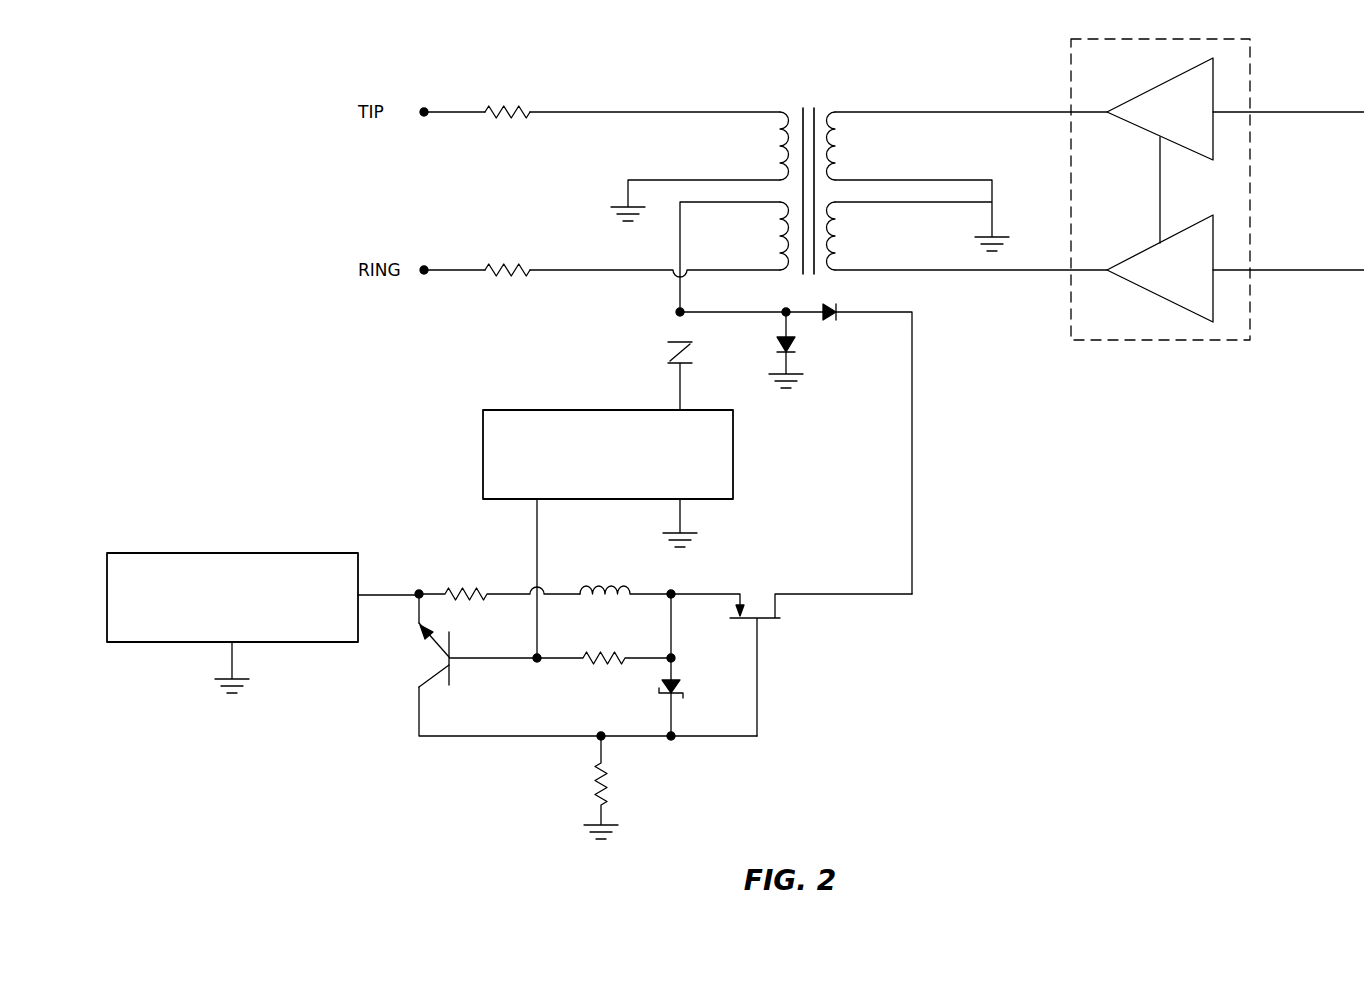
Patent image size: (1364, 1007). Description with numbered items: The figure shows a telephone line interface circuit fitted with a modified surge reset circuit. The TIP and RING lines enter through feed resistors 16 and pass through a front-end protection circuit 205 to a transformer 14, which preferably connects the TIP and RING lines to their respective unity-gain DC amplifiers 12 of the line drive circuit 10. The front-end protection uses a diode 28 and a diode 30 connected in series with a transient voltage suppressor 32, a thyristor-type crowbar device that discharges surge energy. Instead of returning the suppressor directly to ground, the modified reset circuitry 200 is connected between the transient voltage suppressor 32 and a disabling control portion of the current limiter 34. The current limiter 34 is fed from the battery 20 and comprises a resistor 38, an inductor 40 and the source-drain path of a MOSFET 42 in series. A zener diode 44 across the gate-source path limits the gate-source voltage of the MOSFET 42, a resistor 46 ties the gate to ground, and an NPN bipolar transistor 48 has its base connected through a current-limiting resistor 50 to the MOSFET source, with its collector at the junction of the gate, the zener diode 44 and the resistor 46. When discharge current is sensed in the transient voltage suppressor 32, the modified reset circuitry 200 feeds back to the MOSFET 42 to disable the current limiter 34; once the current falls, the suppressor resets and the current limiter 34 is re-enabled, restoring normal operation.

The line drive circuit 10 is at (1250, 56).
The unity-gain DC amplifier 12 is at (1235, 190).
The transformer 14 is at (818, 102).
The feed resistor 16 is at (510, 128).
The battery 20 is at (305, 553).
The diode 28 is at (800, 346).
The diode 30 is at (835, 304).
The transient voltage suppressor 32 is at (662, 352).
The current limiter 34 is at (475, 763).
The resistor 38 is at (468, 580).
The inductor 40 is at (610, 582).
The MOSFET 42 is at (730, 607).
The zener diode 44 is at (686, 689).
The resistor 46 is at (614, 788).
The NPN bipolar transistor 48 is at (440, 677).
The current-limiting resistor 50 is at (610, 649).
The modified reset circuitry 200 is at (733, 438).
The front-end protection circuit 205 is at (707, 103).